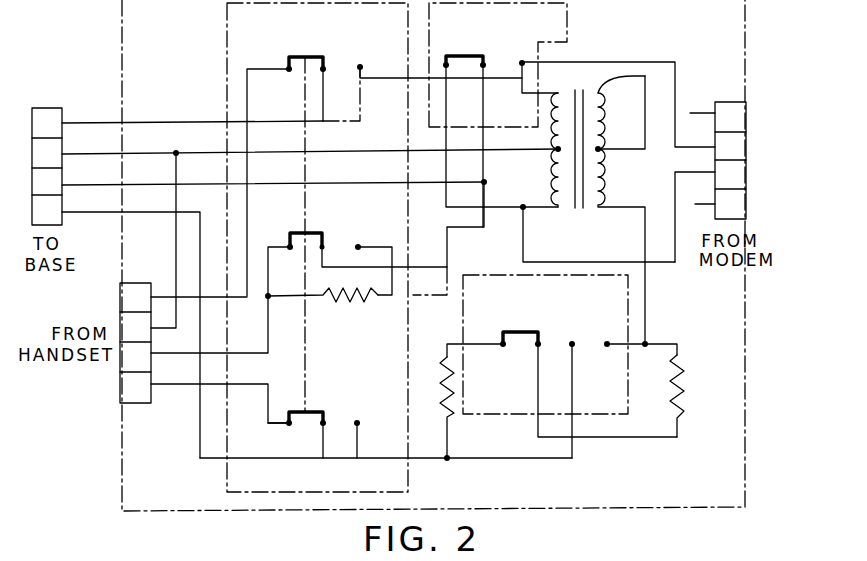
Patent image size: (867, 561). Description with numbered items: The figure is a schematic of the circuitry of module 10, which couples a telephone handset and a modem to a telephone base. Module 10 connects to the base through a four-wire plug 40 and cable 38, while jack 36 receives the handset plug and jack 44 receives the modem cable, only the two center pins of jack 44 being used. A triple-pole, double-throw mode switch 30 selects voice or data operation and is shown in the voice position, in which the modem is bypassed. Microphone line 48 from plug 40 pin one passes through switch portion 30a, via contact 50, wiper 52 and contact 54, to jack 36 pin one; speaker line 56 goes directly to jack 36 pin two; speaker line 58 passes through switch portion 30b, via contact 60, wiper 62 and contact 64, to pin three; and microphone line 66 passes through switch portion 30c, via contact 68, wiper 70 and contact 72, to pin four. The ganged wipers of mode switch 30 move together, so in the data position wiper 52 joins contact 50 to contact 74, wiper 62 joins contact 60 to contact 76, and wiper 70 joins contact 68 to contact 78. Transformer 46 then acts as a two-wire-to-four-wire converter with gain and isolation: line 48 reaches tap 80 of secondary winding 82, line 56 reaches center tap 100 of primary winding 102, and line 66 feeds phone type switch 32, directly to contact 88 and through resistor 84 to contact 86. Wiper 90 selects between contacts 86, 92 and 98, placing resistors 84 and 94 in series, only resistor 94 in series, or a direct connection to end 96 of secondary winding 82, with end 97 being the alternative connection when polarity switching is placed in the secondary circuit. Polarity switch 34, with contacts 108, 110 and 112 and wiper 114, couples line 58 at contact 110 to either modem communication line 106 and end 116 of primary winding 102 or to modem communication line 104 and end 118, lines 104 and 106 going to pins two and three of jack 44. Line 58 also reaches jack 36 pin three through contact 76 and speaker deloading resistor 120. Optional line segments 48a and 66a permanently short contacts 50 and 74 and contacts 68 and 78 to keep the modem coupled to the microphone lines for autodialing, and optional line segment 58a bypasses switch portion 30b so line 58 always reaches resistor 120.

The module 10 is at (106, 437).
The mode switch 30 is at (226, 40).
The switch portion of mode switch 30a is at (266, 62).
The switch portion of mode switch 30b is at (282, 226).
The switch portion of mode switch 30c is at (315, 393).
The phone type switch 32 is at (527, 415).
The polarity switch 34 is at (568, 33).
The jack 36 is at (143, 405).
The cable 38 is at (92, 115).
The plug 40 is at (46, 106).
The jack 44 is at (721, 100).
The transformer 46 is at (580, 219).
The microphone line 48 is at (139, 122).
The line segment 48a is at (361, 120).
The contact 50 is at (326, 72).
The wiper 52 is at (310, 57).
The contact 54 is at (288, 72).
The speaker line 56 is at (140, 153).
The speaker line 58 is at (140, 184).
The line segment 58a is at (429, 298).
The contact 60 is at (326, 244).
The wiper 62 is at (316, 232).
The contact 64 is at (292, 252).
The microphone line 66 is at (139, 212).
The line segment 66a is at (339, 457).
The contact 68 is at (321, 428).
The wiper 70 is at (326, 418).
The contact 72 is at (285, 427).
The contact 74 is at (363, 65).
The contact 76 is at (361, 245).
The contact 78 is at (360, 421).
The tap 80 is at (603, 151).
The secondary winding 82 is at (606, 121).
The resistor 84 is at (446, 383).
The contact 86 is at (501, 348).
The contact 88 is at (572, 340).
The wiper 90 is at (521, 331).
The contact 92 is at (535, 348).
The resistor 94 is at (680, 368).
The end of secondary winding 96 is at (604, 208).
The end of secondary winding 97 is at (636, 78).
The contact 98 is at (607, 348).
The center tap 100 is at (555, 150).
The primary winding 102 is at (555, 189).
The modem communication line 104 is at (655, 60).
The modem communication line 106 is at (658, 267).
The contact 108 is at (447, 68).
The contact 110 is at (485, 60).
The contact 112 is at (519, 68).
The wiper 114 is at (466, 57).
The end of primary winding 116 is at (556, 208).
The end of primary winding 118 is at (556, 92).
The speaker deloading resistor 120 is at (344, 303).